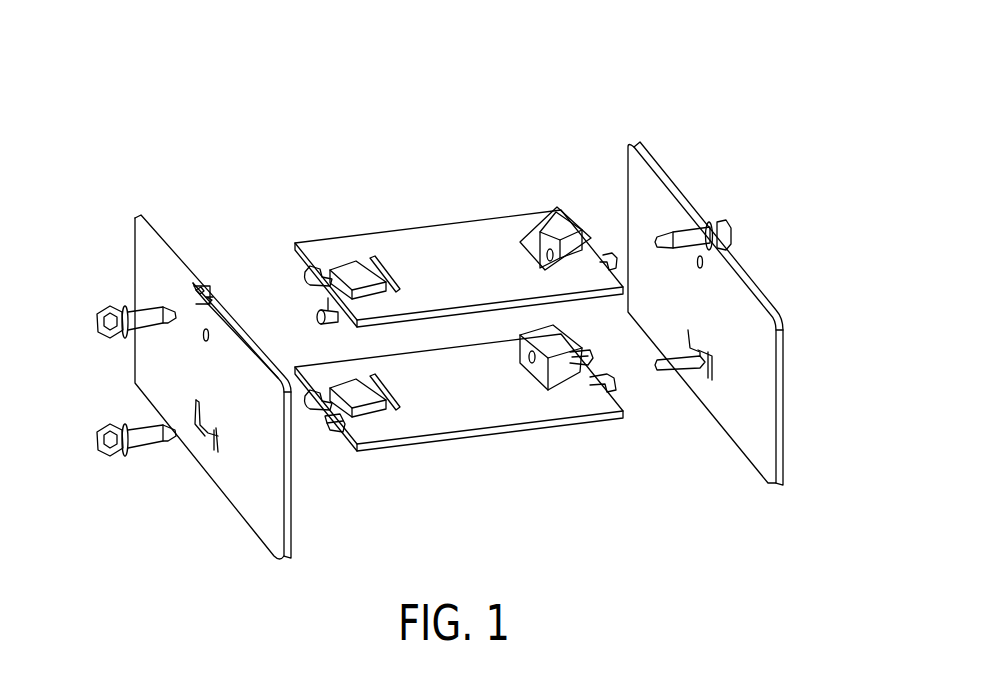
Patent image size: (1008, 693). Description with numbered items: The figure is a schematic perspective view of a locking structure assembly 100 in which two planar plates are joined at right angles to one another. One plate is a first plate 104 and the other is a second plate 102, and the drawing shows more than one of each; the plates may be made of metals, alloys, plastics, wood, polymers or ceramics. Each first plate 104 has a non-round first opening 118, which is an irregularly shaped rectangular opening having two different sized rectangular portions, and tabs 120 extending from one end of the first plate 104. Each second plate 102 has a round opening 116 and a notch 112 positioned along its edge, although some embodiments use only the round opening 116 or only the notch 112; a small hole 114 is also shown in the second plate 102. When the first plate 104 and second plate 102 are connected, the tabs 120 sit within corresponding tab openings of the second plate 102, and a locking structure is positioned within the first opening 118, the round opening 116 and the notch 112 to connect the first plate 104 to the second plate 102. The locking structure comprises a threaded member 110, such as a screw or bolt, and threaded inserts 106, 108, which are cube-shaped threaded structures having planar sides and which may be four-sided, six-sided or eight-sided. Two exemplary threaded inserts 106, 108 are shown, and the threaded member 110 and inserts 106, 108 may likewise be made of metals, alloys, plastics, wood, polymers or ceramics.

The connector assembly 100 is at (383, 98).
The second plate 102 is at (240, 477).
The first plate 104 is at (445, 242).
The threaded insert 106 is at (345, 262).
The threaded insert 108 is at (360, 407).
The threaded member 110 is at (99, 328).
The notch 112 is at (223, 291).
The hole 114 is at (203, 339).
The round opening 116 is at (207, 439).
The first opening 118 is at (380, 269).
The tabs 120 is at (303, 279).